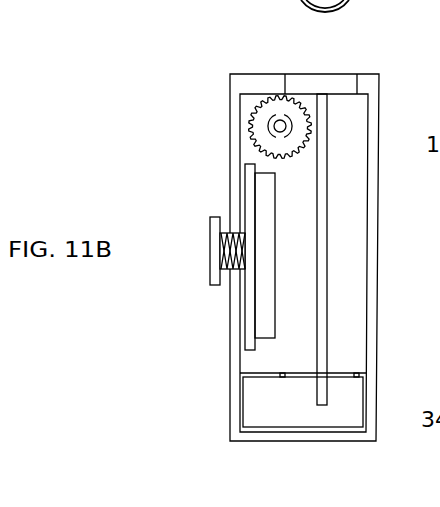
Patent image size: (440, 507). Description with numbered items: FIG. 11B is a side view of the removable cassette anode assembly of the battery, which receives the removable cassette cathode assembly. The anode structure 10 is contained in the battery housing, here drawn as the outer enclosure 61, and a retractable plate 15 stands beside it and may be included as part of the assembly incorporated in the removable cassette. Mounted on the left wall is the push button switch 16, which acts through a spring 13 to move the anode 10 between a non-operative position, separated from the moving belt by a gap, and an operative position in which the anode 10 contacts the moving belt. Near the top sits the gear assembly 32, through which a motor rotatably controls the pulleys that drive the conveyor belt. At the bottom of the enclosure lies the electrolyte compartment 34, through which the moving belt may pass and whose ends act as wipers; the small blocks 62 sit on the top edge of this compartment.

The anode structure 10 is at (262, 307).
The spring 13 is at (228, 262).
The plate 15 is at (250, 197).
The push button switch 16 is at (209, 267).
The gear assembly 32 is at (265, 115).
The electrolyte compartment 34 is at (263, 403).
The housing 61 is at (372, 122).
The blocks 62 is at (303, 373).